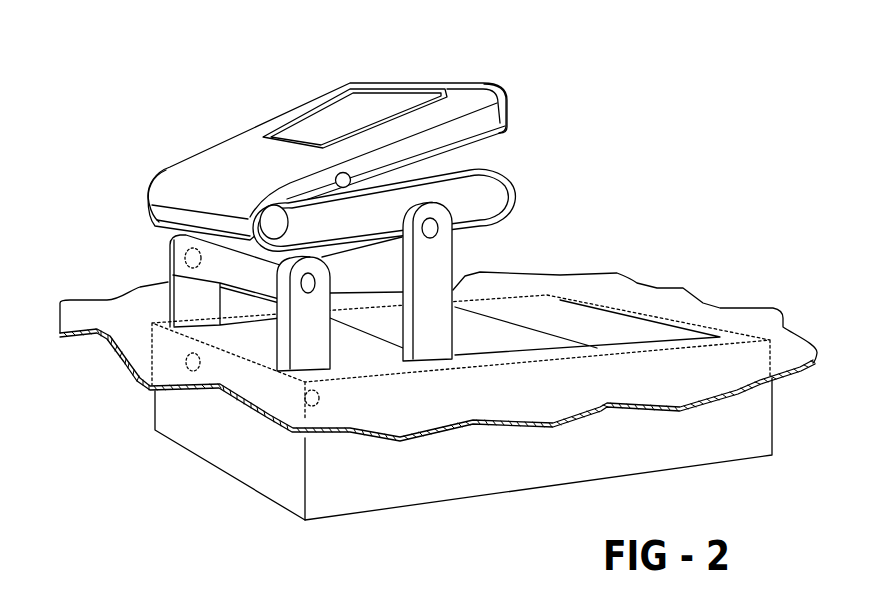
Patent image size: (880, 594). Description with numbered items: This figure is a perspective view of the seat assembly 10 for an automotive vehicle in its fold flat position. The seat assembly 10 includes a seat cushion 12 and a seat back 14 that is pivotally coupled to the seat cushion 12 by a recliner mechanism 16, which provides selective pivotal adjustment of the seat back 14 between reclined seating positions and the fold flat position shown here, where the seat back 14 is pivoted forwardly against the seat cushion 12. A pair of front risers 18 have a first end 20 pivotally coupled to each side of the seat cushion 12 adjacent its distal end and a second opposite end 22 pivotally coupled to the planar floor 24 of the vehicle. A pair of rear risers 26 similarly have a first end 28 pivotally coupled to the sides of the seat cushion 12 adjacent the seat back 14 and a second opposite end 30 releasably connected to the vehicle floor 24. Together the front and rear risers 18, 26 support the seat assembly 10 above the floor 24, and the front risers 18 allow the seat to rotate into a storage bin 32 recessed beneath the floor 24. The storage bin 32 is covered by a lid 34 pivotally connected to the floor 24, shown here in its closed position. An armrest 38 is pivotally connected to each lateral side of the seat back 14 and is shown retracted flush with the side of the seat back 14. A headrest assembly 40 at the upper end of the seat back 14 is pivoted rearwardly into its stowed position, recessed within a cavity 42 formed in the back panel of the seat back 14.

The seat assembly 10 is at (659, 123).
The seat cushion 12 is at (510, 185).
The seat back 14 is at (247, 163).
The recliner mechanism 16 is at (148, 200).
The front risers 18 is at (438, 293).
The first end 20 is at (438, 235).
The second opposite end 22 is at (480, 423).
The planar floor 24 is at (740, 338).
The rear risers 26 is at (190, 303).
The first end 28 is at (184, 260).
The second opposite end 30 is at (188, 368).
The storage bin 32 is at (723, 447).
The lid 34 is at (584, 318).
The armrest 38 is at (497, 125).
The headrest assembly 40 is at (340, 113).
The cavity 42 is at (287, 117).